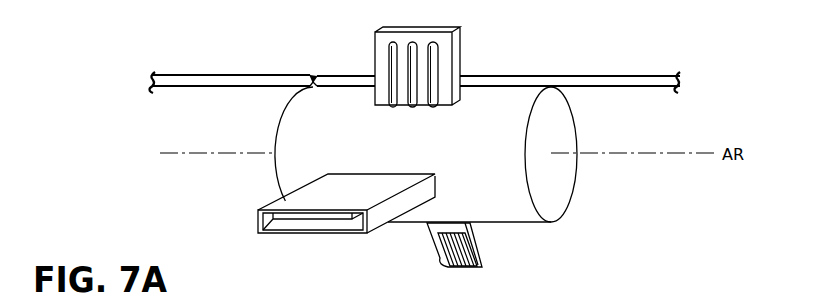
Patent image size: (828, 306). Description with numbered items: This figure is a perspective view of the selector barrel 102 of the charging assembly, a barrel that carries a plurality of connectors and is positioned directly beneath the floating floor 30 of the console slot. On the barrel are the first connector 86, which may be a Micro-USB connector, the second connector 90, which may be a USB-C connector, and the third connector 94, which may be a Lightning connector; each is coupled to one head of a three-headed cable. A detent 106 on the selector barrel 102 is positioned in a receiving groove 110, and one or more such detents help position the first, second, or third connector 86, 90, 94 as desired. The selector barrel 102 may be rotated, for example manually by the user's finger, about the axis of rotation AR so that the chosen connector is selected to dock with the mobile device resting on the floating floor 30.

The floating floor 30 is at (612, 73).
The first connector 86 is at (432, 60).
The receiving groove 110 is at (313, 82).
The detent 106 is at (313, 85).
The selector barrel 102 is at (585, 202).
The second connector 90 is at (303, 217).
The third connector 94 is at (465, 257).